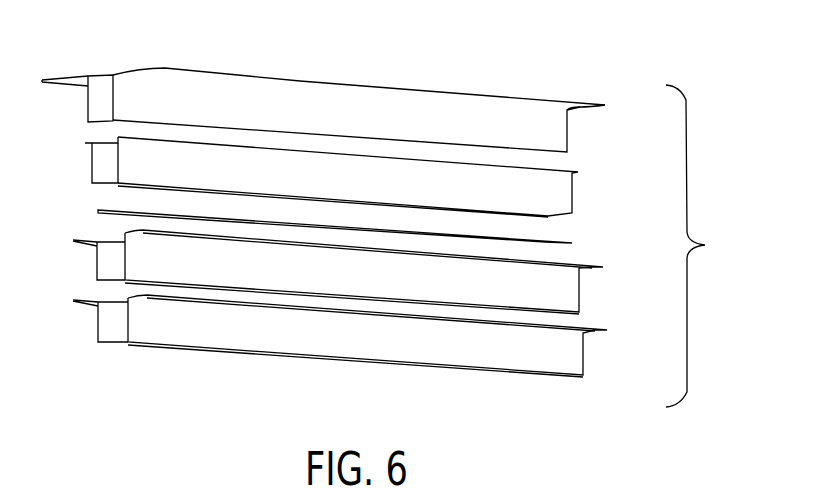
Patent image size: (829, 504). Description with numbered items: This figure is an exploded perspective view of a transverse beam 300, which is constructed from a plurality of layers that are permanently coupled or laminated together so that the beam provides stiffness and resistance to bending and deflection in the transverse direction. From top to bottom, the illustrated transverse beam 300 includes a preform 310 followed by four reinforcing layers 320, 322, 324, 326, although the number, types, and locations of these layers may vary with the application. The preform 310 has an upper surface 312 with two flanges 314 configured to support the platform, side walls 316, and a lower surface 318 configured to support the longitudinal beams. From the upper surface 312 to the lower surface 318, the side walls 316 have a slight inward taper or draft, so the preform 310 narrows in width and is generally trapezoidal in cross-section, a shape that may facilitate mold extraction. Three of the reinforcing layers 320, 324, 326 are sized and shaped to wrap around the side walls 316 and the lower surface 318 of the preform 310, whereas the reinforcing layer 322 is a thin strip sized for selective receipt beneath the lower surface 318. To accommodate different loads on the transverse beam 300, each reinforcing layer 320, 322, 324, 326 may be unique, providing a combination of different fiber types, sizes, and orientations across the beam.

The transverse beam 300 is at (707, 246).
The preform 310 is at (88, 83).
The upper surface 312 is at (102, 75).
The flanges 314 is at (592, 103).
The side walls 316 is at (87, 97).
The lower surface 318 is at (115, 122).
The reinforcing layer 320 is at (128, 172).
The reinforcing layer 322 is at (113, 210).
The reinforcing layer 324 is at (112, 250).
The reinforcing layer 326 is at (115, 318).